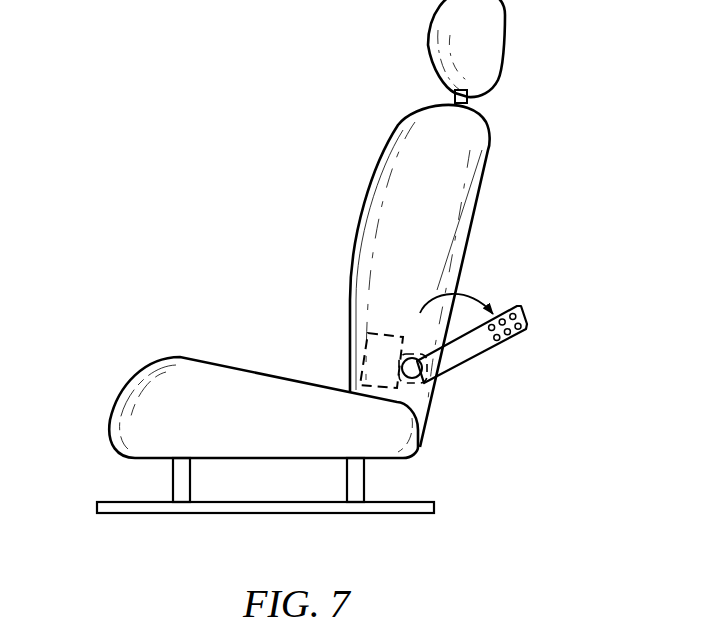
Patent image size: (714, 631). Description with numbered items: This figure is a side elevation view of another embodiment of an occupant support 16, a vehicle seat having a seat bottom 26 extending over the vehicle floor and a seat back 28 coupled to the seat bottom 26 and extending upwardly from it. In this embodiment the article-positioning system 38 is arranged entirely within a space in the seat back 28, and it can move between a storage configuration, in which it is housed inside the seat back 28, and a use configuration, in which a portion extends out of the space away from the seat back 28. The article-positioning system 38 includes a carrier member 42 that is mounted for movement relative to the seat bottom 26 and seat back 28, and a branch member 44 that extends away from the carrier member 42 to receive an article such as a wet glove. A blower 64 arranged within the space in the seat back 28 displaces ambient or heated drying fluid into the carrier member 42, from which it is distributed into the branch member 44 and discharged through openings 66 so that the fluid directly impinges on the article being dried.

The occupant support 16 is at (185, 227).
The seat bottom 26 is at (128, 342).
The seat back 28 is at (478, 203).
The article-positioning system 38 is at (483, 365).
The carrier member 42 is at (424, 380).
The branch member 44 is at (505, 345).
The blower 64 is at (367, 352).
The openings 66 is at (503, 306).